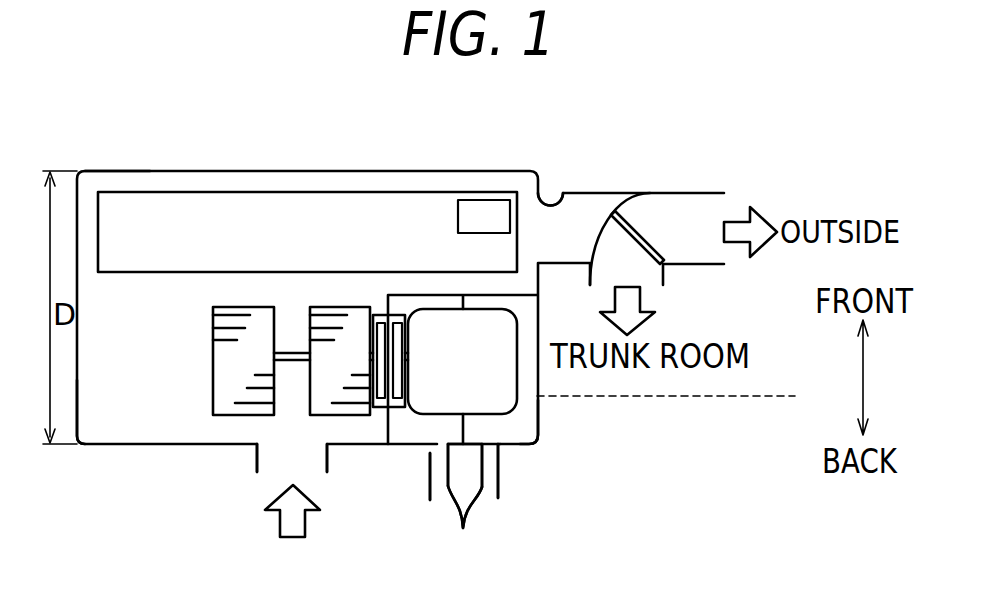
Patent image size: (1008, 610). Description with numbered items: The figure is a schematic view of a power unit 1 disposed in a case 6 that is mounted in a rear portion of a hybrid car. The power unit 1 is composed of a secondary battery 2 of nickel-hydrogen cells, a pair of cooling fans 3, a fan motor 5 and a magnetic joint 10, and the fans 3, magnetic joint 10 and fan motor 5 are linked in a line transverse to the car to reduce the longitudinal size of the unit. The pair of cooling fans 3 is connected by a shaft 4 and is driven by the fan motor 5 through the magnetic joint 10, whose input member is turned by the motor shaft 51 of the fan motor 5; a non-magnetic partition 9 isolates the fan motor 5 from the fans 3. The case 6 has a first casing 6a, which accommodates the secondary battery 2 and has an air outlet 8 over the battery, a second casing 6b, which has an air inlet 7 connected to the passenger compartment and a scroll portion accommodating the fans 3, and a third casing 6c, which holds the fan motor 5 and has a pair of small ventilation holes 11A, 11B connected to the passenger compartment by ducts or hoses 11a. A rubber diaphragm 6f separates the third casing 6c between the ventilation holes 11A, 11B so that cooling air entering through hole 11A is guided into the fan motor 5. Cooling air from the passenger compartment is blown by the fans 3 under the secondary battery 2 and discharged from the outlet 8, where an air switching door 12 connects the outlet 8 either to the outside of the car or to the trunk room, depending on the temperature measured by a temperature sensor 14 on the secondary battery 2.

The power unit 1 is at (420, 162).
The secondary battery 2 is at (168, 212).
The cooling fans 3 is at (243, 417).
The shaft 4 is at (295, 365).
The fan motor 5 is at (517, 380).
The case 6 is at (142, 457).
The first casing 6a is at (109, 178).
The second casing 6b is at (112, 418).
The third casing 6c is at (528, 440).
The rubber diaphragm 6f is at (490, 445).
The air inlet 7 is at (323, 458).
The air outlet 8 is at (556, 198).
The non-magnetic partition 9 is at (396, 410).
The magnetic joint 10 is at (381, 318).
The motor shaft 51 is at (407, 356).
The ventilation hole 11A is at (437, 446).
The ducts or hoses 11a is at (473, 525).
The ventilation hole 11B is at (500, 462).
The air switching door 12 is at (653, 245).
The temperature sensor 14 is at (492, 200).